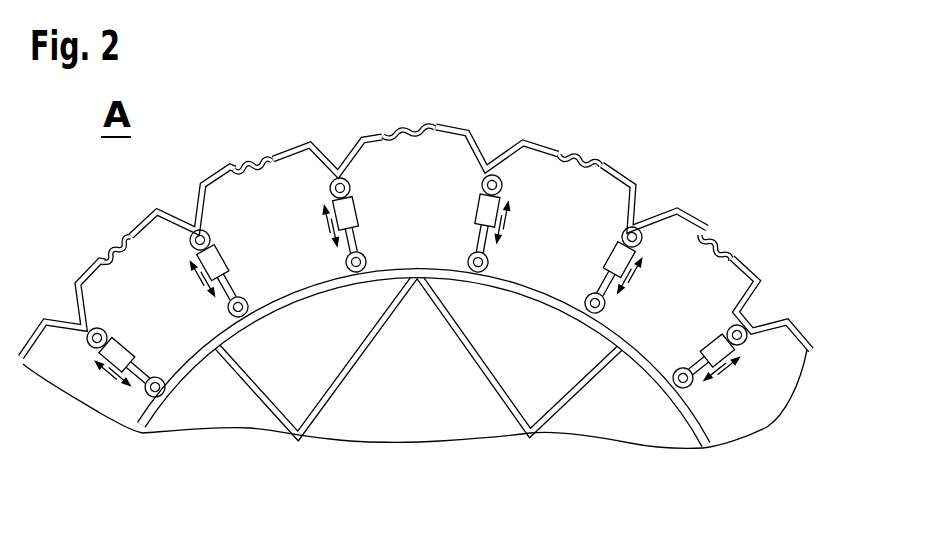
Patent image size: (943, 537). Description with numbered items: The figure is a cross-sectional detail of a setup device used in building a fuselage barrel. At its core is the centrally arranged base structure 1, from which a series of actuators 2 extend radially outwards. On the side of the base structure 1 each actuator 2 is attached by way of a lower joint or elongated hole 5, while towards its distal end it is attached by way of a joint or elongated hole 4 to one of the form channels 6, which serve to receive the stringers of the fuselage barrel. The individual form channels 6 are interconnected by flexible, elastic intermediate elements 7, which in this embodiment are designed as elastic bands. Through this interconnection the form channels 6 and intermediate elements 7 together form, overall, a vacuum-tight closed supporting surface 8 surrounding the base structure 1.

The base structure 1 is at (531, 433).
The actuator 2 is at (723, 350).
The joint/elongated hole 4 is at (339, 177).
The joint/elongated hole 5 is at (362, 258).
The form channel 6 is at (748, 270).
The flexible intermediate element 7 is at (708, 250).
The supporting surface 8 is at (583, 147).